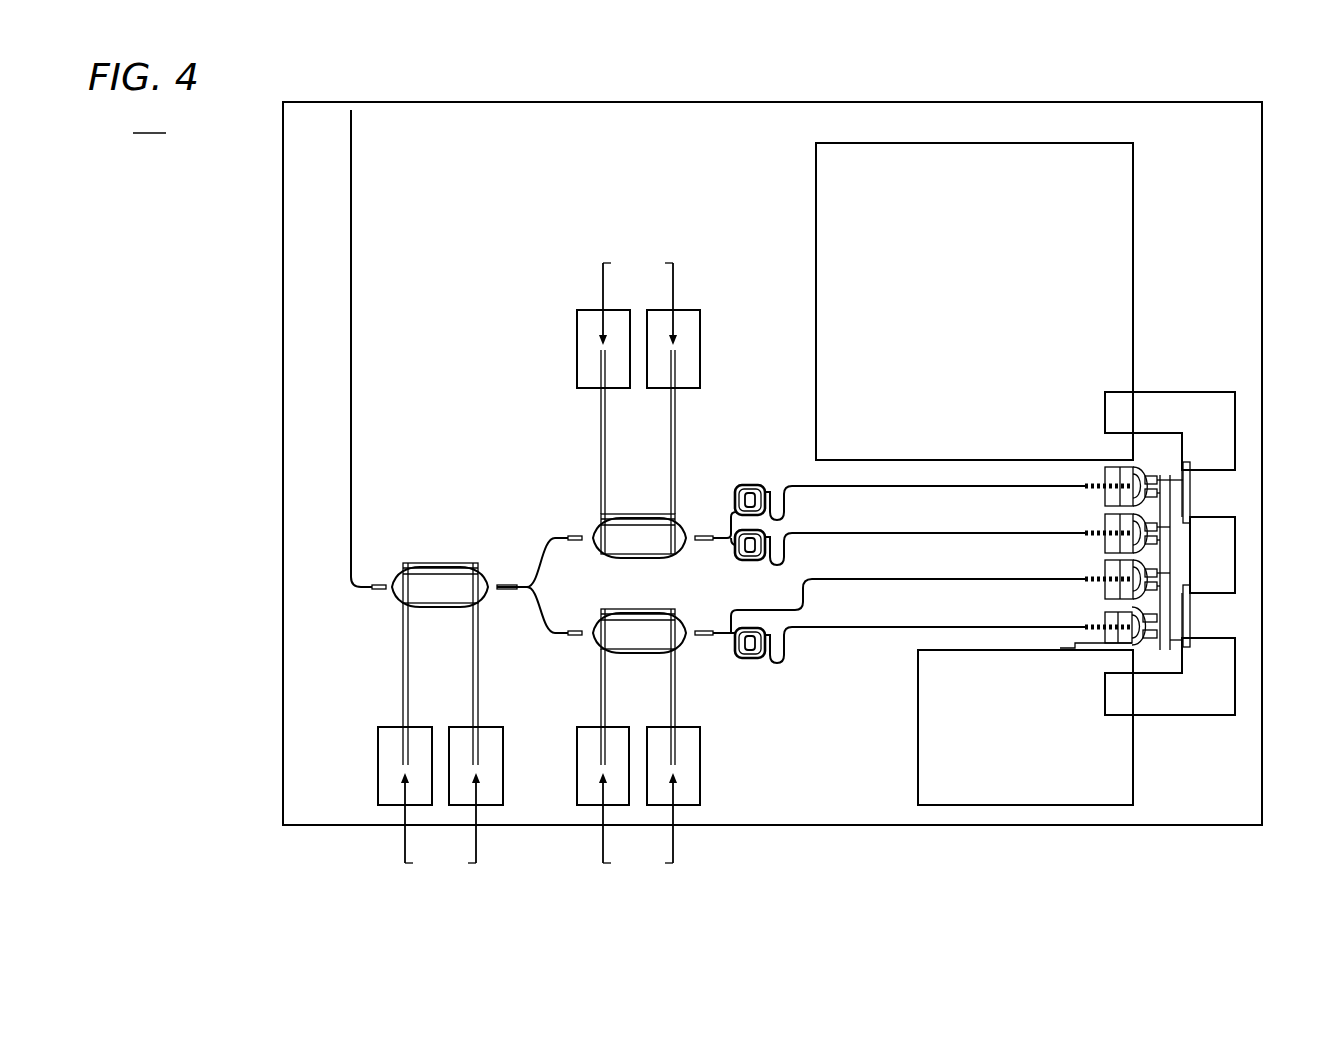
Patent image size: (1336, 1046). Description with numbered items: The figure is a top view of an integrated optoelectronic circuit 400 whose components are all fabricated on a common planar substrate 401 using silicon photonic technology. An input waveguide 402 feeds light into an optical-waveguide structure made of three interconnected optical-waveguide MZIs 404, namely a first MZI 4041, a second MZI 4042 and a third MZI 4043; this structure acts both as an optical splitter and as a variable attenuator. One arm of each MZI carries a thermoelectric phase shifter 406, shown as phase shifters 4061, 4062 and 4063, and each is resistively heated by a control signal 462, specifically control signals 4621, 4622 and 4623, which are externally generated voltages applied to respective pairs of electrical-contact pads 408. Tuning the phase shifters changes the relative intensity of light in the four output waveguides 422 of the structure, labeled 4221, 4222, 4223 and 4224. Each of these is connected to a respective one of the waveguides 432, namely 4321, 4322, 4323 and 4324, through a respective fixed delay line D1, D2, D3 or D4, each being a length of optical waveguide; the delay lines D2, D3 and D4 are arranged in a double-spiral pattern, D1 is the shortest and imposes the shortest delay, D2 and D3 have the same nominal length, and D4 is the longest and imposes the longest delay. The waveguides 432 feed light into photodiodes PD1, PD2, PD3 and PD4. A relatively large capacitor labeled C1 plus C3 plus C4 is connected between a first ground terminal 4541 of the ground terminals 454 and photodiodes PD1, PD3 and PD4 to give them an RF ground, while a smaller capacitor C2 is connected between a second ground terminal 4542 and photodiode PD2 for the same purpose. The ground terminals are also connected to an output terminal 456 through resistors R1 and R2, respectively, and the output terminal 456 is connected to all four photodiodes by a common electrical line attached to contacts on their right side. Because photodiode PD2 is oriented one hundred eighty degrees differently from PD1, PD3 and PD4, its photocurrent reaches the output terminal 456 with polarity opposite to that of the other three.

The integrated optoelectronic circuit 400 is at (154, 120).
The planar substrate 401 is at (428, 102).
The input waveguide 402 is at (352, 197).
The optical-waveguide MZI 404 is at (539, 557).
The first optical-waveguide MZI 4041 is at (438, 618).
The second optical-waveguide MZI 4042 is at (600, 557).
The third optical-waveguide MZI 4043 is at (590, 651).
The thermoelectric phase shifter 406 is at (539, 556).
The first thermoelectric phase shifter 4061 is at (443, 562).
The second thermoelectric phase shifter 4062 is at (640, 513).
The third thermoelectric phase shifter 4063 is at (642, 608).
The electrical-contact pad 408 is at (577, 347).
The output waveguide of optical-waveguide structure 422 is at (746, 581).
The first output waveguide 4221 is at (734, 613).
The second output waveguide 4222 is at (732, 652).
The third output waveguide 4223 is at (732, 546).
The fourth output waveguide 4224 is at (733, 516).
The photodiode feed waveguide 432 is at (938, 577).
The first photodiode feed waveguide 4321 is at (917, 580).
The second photodiode feed waveguide 4322 is at (898, 628).
The third photodiode feed waveguide 4323 is at (933, 534).
The fourth photodiode feed waveguide 4324 is at (950, 487).
The ground terminal 454 is at (1220, 553).
The first ground terminal 4541 is at (1237, 428).
The second ground terminal 4542 is at (1237, 672).
The output terminal 456 is at (1237, 552).
The control signal 462 is at (542, 567).
The first control signal 4621 is at (444, 831).
The second control signal 4622 is at (641, 294).
The third control signal 4623 is at (641, 831).
The first fixed delay line D1 is at (798, 609).
The second fixed delay line D2 is at (753, 661).
The third fixed delay line D3 is at (752, 561).
The fourth fixed delay line D4 is at (753, 484).
The first photodiode PD1 is at (1108, 587).
The second photodiode PD2 is at (1137, 654).
The third photodiode PD3 is at (1108, 541).
The fourth photodiode PD4 is at (1108, 494).
The first resistor R1 is at (1190, 496).
The second resistor R2 is at (1190, 623).
The large capacitor C1+C3+C4 C1 is at (822, 203).
The smaller capacitor C2 is at (918, 724).